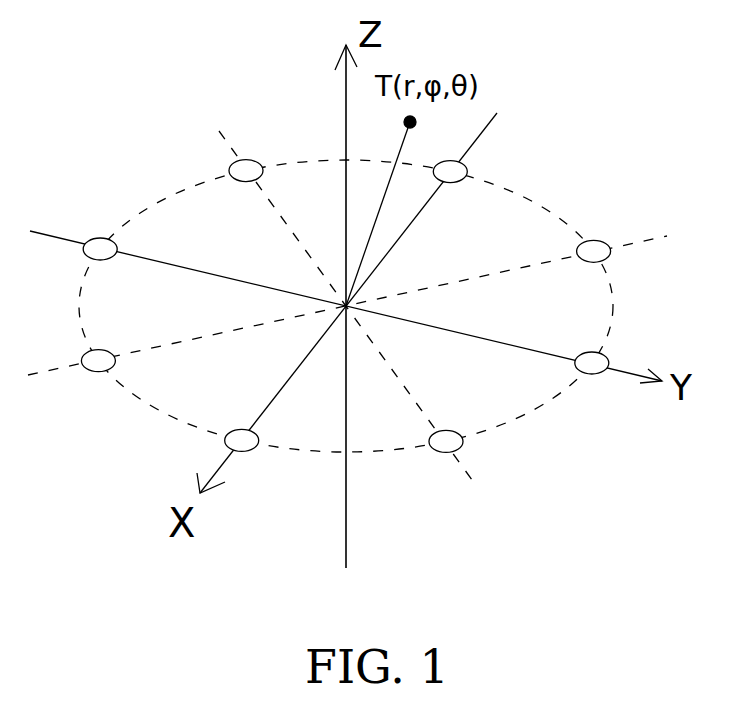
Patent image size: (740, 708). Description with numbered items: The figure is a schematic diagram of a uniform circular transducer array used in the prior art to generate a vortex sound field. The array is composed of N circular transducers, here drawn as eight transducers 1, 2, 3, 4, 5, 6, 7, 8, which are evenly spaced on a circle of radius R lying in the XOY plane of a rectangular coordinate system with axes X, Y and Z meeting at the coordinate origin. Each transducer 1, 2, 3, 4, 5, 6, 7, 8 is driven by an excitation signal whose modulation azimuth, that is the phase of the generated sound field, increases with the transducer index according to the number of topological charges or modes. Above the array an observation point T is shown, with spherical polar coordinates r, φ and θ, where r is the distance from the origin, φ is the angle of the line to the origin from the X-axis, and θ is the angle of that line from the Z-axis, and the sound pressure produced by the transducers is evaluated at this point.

The circular transducer 1 is at (242, 440).
The circular transducer 2 is at (446, 441).
The circular transducer 3 is at (592, 363).
The circular transducer 4 is at (594, 251).
The circular transducer 5 is at (450, 172).
The circular transducer 6 is at (246, 171).
The circular transducer 7 is at (100, 249).
The circular transducer 8 is at (98, 361).